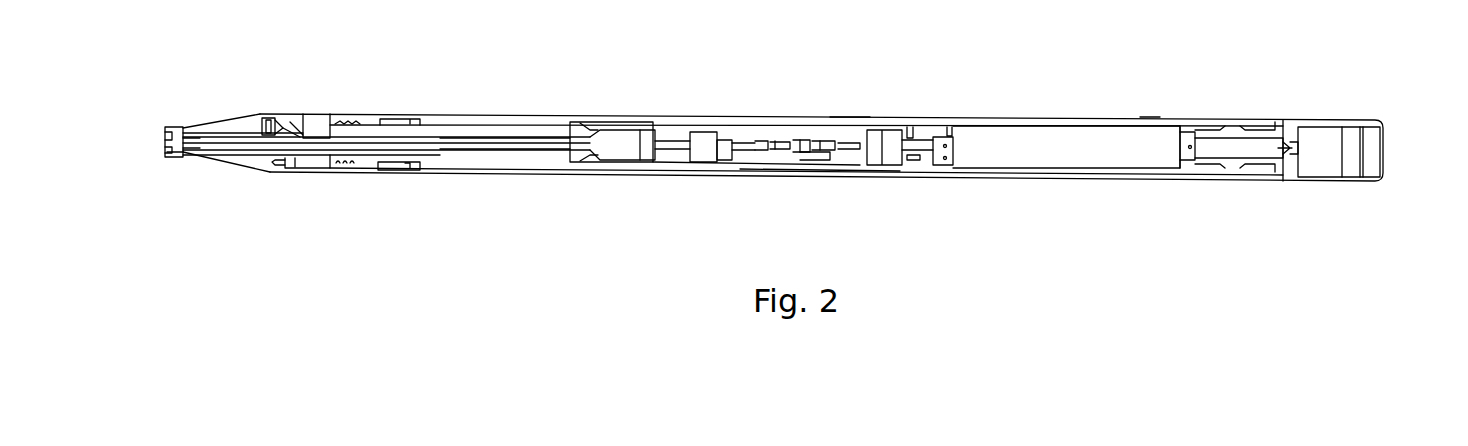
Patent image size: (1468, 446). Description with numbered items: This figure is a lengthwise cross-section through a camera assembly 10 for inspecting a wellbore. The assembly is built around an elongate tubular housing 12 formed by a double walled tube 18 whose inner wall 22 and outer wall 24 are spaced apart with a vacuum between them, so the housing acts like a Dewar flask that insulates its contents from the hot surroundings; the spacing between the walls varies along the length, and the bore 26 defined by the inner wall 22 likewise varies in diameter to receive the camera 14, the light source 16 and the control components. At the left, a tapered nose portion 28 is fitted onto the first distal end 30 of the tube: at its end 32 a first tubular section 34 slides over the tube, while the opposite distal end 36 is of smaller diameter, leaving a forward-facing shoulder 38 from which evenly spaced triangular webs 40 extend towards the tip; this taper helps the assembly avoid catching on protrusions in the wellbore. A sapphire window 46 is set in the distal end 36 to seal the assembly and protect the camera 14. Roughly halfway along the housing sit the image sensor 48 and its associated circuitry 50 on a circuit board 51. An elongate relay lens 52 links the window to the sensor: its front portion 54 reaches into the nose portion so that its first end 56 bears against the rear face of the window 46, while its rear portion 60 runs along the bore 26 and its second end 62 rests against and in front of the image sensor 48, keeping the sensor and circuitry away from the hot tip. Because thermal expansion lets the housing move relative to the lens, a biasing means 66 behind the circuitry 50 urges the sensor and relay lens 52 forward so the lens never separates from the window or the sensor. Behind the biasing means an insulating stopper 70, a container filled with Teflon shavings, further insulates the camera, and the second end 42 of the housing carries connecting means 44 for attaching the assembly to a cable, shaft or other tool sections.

The camera assembly 10 is at (1068, 92).
The housing 12 is at (755, 116).
The camera 14 is at (725, 140).
The light source 16 is at (313, 128).
The double walled tube 18 is at (857, 116).
The inner wall 22 is at (785, 170).
The outer wall 24 is at (833, 176).
The bore 26 is at (613, 163).
The nose portion 28 is at (227, 165).
The first distal end 30 is at (370, 162).
The end of nose portion 32 is at (382, 172).
The first tubular section 34 is at (310, 172).
The distal end 36 is at (170, 155).
The shoulder 38 is at (262, 128).
The triangular webs 40 is at (228, 122).
The second end 42 is at (1365, 182).
The connecting means 44 is at (1372, 145).
The window 46 is at (170, 128).
The image sensor 48 is at (700, 135).
The circuitry 50 is at (808, 140).
The circuit board 51 is at (813, 155).
The relay lens 52 is at (483, 145).
The front portion of relay lens 54 is at (273, 128).
The first end of relay lens 56 is at (190, 155).
The rear portion of relay lens 60 is at (548, 148).
The second end of relay lens 62 is at (640, 150).
The biasing means 66 is at (892, 165).
The insulating stopper 70 is at (1053, 155).